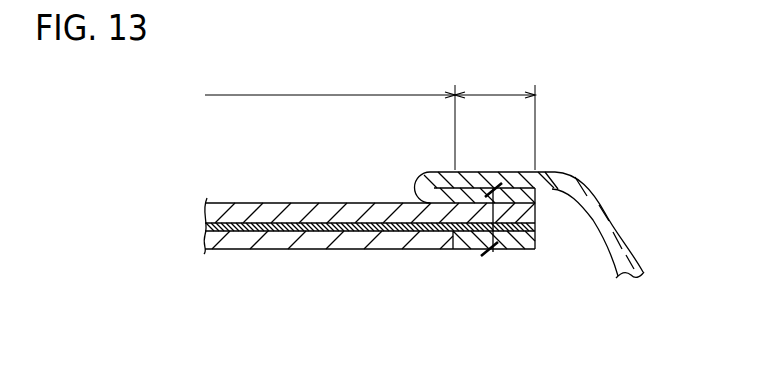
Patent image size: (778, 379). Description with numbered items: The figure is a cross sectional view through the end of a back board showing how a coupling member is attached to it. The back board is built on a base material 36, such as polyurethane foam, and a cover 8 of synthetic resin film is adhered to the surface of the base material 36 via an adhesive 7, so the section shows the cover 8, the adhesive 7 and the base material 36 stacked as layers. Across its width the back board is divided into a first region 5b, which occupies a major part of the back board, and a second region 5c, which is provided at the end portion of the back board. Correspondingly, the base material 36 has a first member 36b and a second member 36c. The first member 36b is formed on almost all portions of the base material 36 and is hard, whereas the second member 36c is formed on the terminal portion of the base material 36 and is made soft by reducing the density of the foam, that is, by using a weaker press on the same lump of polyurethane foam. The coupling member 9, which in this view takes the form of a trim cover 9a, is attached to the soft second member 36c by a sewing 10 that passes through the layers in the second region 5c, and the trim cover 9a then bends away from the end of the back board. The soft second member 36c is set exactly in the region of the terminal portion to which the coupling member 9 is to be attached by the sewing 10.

The first region 5b is at (330, 118).
The second region 5c is at (495, 119).
The adhesive 7 is at (324, 228).
The cover 8 is at (254, 208).
The coupling member 9 is at (559, 181).
The trim cover 9a is at (613, 222).
The sewing 10 is at (476, 206).
The base material 36 is at (373, 297).
The first member 36b is at (377, 250).
The second member 36c is at (479, 277).